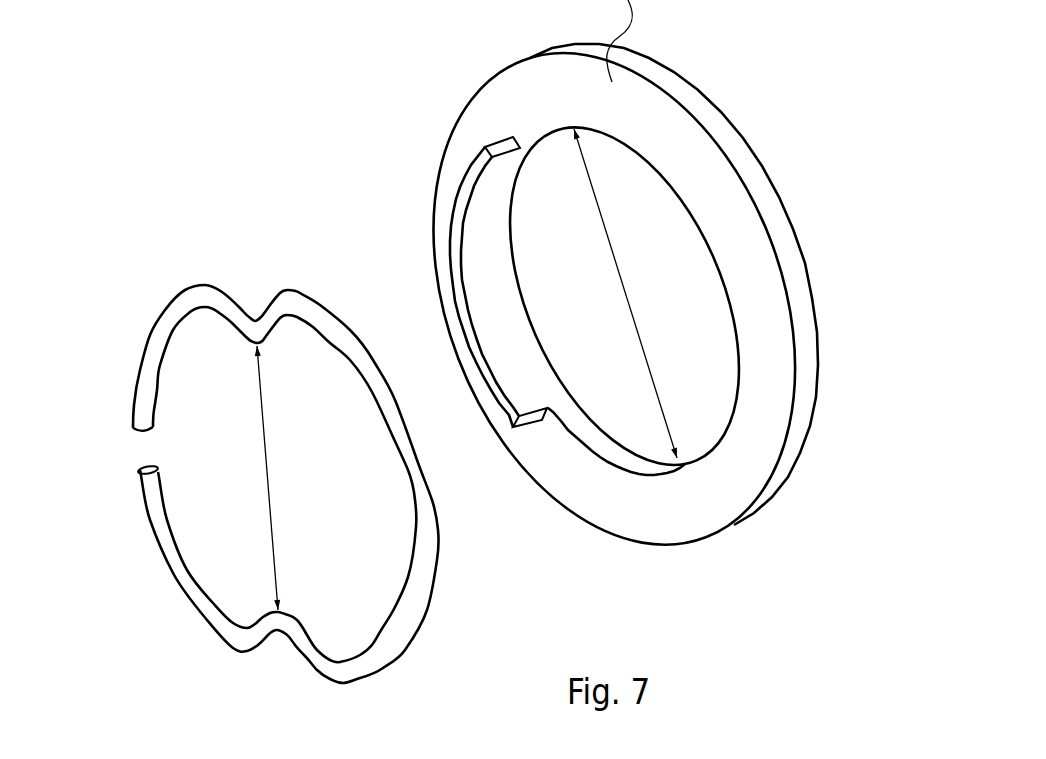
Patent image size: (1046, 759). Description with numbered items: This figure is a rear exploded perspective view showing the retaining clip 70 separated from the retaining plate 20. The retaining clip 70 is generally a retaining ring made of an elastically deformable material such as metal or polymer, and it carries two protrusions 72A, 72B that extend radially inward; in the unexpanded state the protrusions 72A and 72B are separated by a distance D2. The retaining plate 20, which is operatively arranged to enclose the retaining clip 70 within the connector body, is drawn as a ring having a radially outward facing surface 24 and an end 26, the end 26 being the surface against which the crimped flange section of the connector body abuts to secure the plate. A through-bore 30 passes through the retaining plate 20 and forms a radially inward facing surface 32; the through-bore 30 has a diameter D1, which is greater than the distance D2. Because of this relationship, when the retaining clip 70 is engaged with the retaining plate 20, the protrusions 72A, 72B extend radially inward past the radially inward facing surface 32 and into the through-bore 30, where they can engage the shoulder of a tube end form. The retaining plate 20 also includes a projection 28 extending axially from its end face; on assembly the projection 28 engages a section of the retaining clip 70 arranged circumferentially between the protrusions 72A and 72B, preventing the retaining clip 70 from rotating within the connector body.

The retaining plate 20 is at (649, 317).
The radially outward facing surface 24 is at (740, 168).
The end 26 is at (790, 232).
The projection 28 is at (487, 187).
The through-bore 30 is at (563, 300).
The radially inward facing surface 32 is at (533, 362).
The diameter D1 is at (635, 313).
The retaining clip 70 is at (255, 427).
The protrusion 72A is at (255, 320).
The protrusion 72B is at (278, 632).
The distance D2 is at (268, 473).